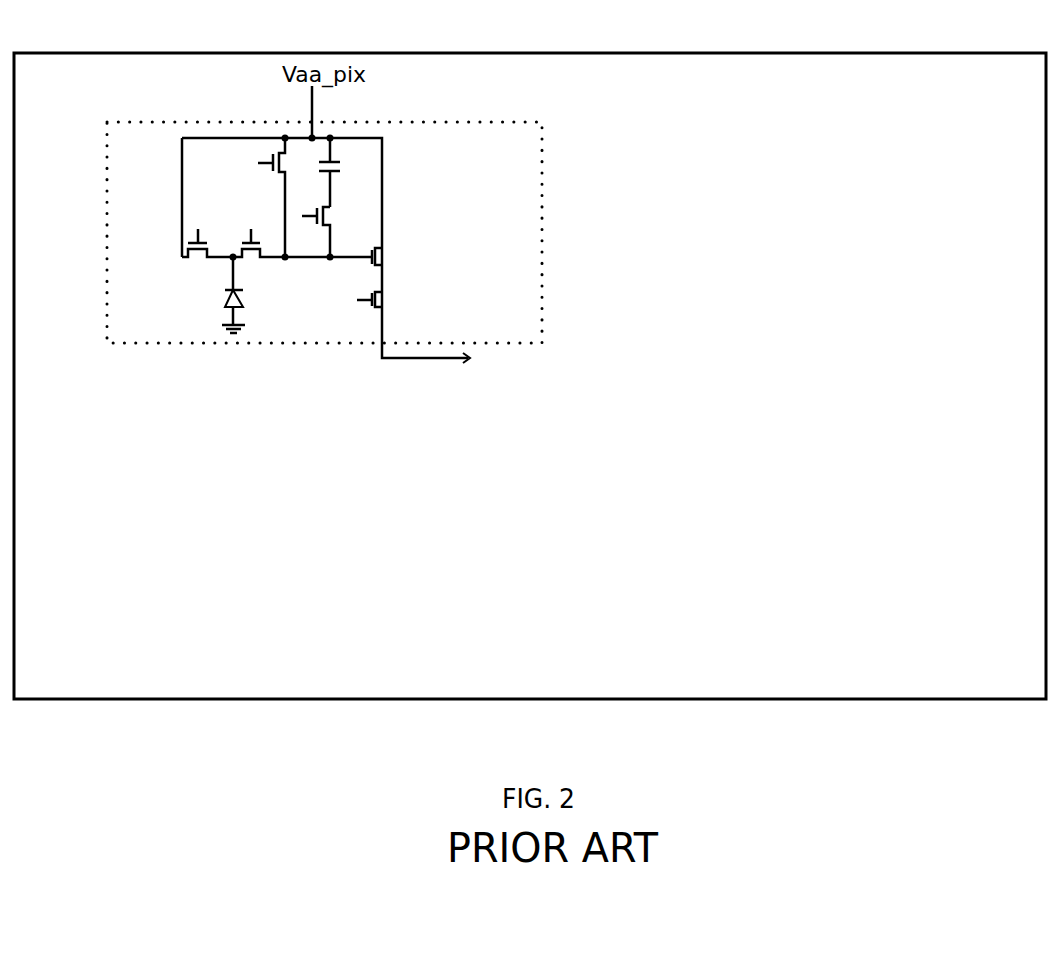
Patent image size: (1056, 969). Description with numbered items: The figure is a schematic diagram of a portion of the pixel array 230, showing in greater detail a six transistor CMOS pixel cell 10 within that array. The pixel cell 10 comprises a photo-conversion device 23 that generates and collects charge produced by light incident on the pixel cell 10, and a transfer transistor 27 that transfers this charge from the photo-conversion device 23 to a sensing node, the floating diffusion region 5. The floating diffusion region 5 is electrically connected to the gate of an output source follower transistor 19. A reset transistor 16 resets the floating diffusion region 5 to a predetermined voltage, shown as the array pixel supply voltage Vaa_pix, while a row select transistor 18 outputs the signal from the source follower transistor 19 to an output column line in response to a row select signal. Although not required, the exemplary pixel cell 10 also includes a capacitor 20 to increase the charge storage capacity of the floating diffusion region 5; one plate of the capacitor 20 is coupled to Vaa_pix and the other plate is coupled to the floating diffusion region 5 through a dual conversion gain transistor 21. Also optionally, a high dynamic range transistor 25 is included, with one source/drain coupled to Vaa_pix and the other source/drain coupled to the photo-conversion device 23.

The pixel array 230 is at (1008, 83).
The pixel cell 10 is at (107, 151).
The reset transistor 16 is at (267, 176).
The capacitor 20 is at (343, 166).
The dual conversion gain transistor 21 is at (324, 216).
The floating diffusion region 5 is at (285, 259).
The high dynamic range transistor 25 is at (200, 259).
The transfer transistor 27 is at (253, 259).
The photo-conversion device 23 is at (227, 297).
The source follower transistor 19 is at (384, 256).
The row select transistor 18 is at (384, 299).